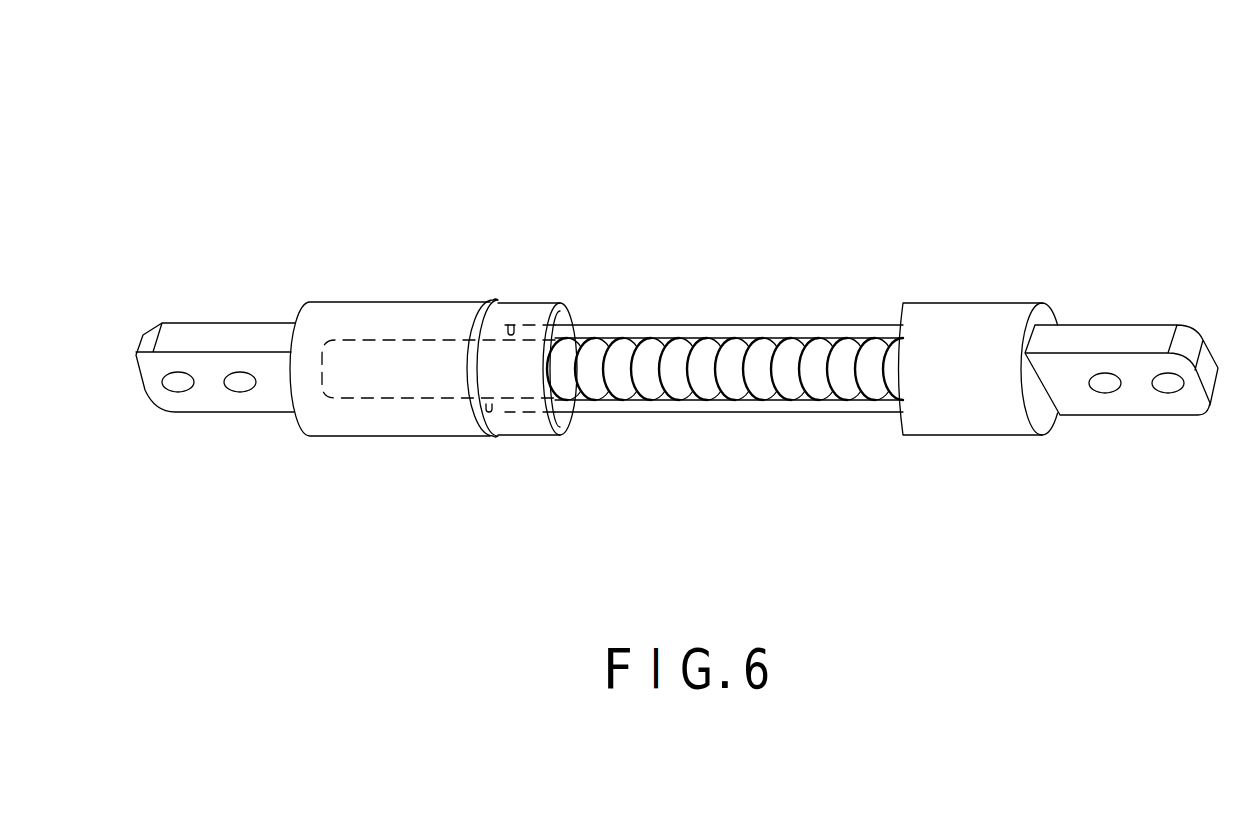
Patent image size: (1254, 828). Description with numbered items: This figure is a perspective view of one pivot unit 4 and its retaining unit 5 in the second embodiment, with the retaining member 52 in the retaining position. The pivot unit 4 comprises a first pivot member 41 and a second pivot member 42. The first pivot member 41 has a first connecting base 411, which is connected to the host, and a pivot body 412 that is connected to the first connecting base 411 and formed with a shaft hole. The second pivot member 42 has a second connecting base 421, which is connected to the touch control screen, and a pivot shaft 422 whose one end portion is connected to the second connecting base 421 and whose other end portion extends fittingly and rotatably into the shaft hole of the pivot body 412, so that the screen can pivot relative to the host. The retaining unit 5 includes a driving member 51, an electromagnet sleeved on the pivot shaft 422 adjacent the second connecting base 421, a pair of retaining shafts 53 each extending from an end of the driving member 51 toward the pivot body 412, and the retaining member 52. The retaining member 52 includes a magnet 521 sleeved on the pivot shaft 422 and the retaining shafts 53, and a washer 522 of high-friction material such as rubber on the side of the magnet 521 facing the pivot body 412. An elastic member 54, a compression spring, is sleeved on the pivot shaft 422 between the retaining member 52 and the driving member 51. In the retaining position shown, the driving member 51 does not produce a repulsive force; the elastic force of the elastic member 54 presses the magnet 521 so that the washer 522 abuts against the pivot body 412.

The pivot unit 4 is at (679, 306).
The first pivot member 41 is at (313, 322).
The first connecting base 411 is at (213, 398).
The pivot body 412 is at (377, 318).
The second pivot member 42 is at (772, 324).
The second connecting base 421 is at (1135, 400).
The pivot shaft 422 is at (645, 378).
The retaining unit 5 is at (732, 403).
The driving member 51 is at (973, 333).
The retaining member 52 is at (491, 387).
The magnet 521 is at (520, 312).
The washer 522 is at (475, 412).
The retaining shafts 53 is at (683, 328).
The elastic member 54 is at (770, 360).